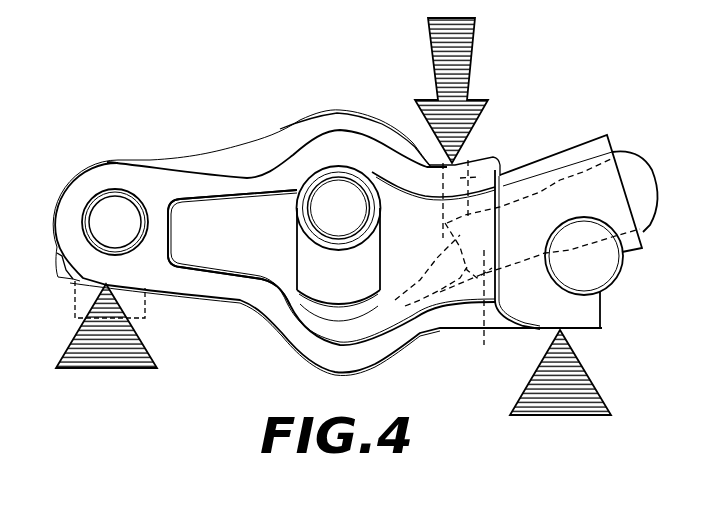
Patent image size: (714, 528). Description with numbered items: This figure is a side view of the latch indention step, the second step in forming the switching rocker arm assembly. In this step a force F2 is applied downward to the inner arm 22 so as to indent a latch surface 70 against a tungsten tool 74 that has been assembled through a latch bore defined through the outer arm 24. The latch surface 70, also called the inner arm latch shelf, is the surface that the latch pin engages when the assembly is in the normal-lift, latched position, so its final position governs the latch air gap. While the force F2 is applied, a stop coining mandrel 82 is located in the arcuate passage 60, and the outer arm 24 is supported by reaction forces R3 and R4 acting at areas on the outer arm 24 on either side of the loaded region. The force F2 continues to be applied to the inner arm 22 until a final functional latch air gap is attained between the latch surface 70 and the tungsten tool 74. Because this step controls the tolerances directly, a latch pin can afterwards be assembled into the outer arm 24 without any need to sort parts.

The outer arm 24 is at (80, 190).
The arcuate passage 60 is at (297, 250).
The stop coining mandrel 82 is at (333, 198).
The latch surface 70 is at (445, 246).
The tungsten tool 74 is at (484, 338).
The inner arm 22 is at (487, 160).
The force F2 is at (474, 40).
The reaction force R3 is at (100, 370).
The reaction force R4 is at (556, 418).